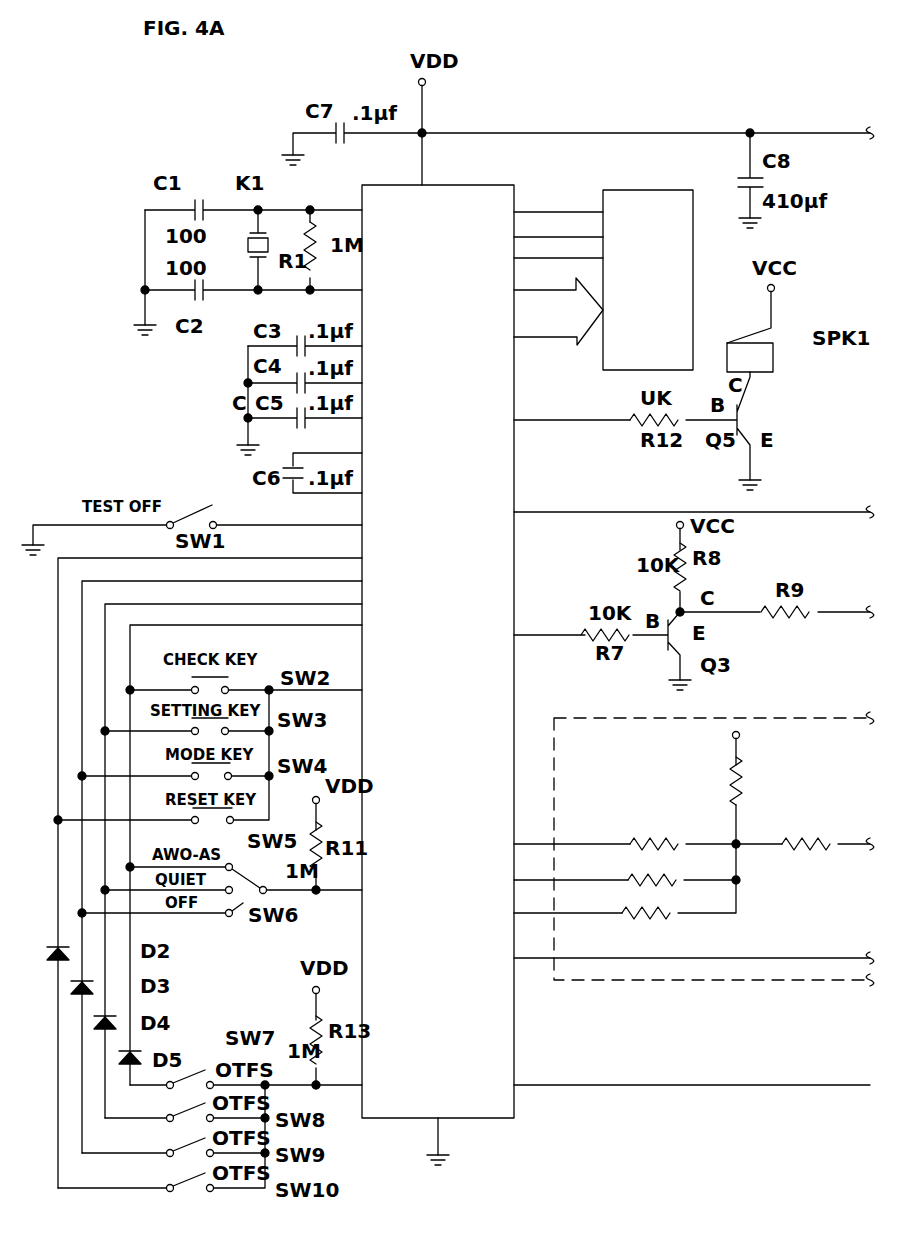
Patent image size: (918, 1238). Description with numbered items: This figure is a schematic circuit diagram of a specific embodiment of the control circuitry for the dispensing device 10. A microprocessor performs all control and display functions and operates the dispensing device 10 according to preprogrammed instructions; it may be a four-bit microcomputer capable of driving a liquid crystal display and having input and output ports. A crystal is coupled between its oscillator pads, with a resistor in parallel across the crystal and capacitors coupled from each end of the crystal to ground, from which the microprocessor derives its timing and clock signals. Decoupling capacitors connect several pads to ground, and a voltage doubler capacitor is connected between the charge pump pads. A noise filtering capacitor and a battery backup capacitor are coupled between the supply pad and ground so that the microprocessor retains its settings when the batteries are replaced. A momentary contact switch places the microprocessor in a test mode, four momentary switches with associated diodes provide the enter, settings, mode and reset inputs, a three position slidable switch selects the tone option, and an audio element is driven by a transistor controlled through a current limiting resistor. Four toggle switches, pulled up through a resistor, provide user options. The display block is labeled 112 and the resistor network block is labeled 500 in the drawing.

The dispensing device 10 is at (668, 1144).
The LCD display 112 is at (612, 264).
The resistor network block 500 is at (660, 981).